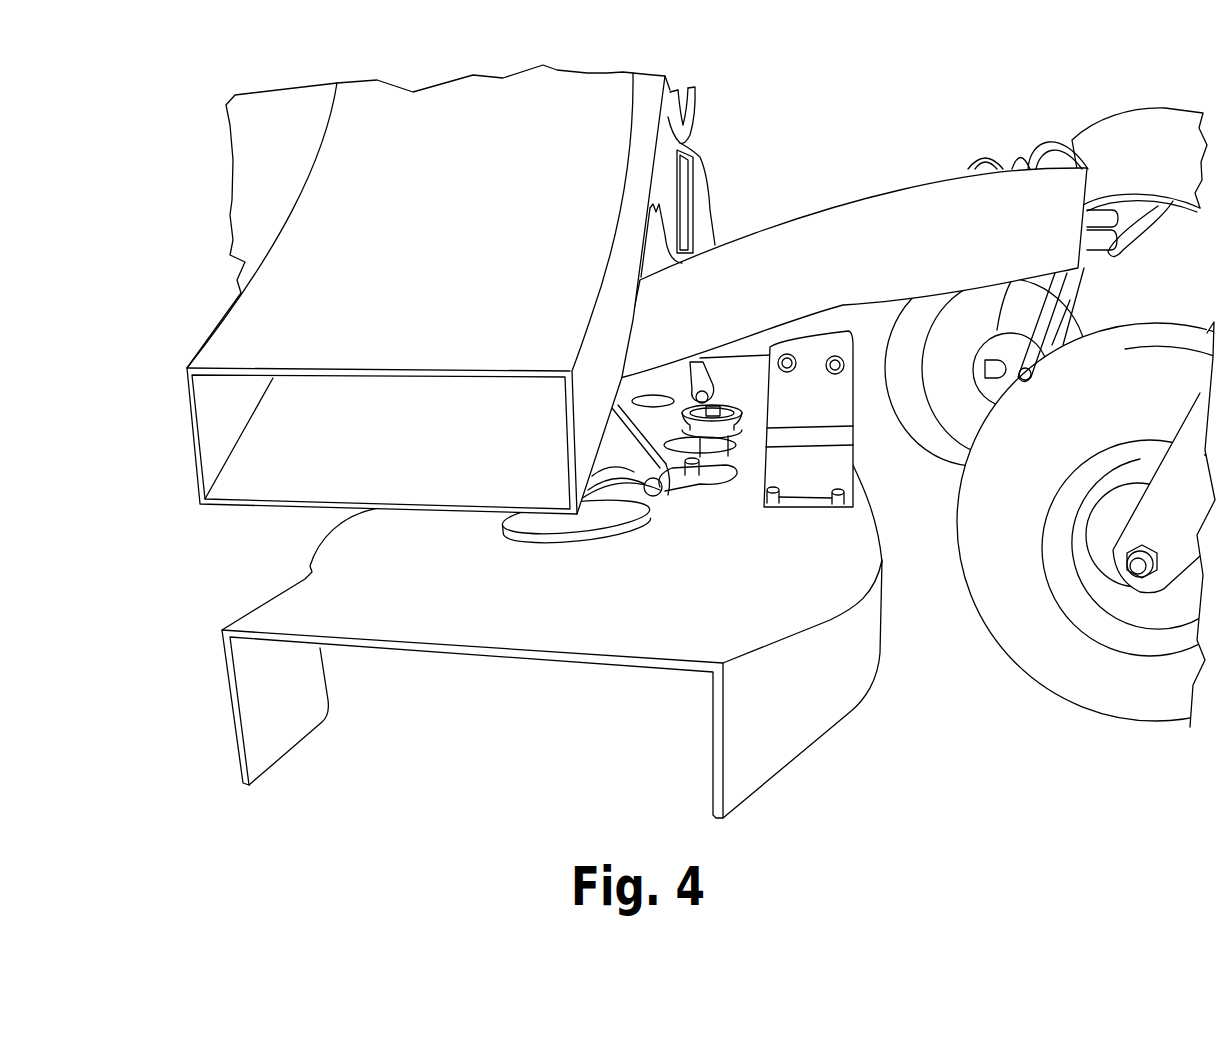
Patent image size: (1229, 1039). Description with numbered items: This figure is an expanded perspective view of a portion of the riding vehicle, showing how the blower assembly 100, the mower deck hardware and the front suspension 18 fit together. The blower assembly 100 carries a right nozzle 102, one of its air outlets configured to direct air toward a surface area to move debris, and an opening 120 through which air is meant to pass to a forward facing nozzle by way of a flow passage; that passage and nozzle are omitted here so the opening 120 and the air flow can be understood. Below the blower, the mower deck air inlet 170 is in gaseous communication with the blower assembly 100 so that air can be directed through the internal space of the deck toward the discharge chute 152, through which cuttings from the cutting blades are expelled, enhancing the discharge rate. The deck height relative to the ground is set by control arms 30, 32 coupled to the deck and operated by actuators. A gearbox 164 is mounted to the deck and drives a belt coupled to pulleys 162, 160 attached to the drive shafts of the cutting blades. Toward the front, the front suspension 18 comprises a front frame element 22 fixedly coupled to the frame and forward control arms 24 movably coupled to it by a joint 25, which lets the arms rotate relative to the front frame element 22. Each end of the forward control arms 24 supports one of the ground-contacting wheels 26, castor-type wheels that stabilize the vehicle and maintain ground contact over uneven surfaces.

The front suspension 18 is at (942, 57).
The front frame element 22 is at (855, 212).
The forward control arms 24 is at (1147, 233).
The joint 25 is at (1095, 240).
The ground-contacting wheels 26 is at (922, 437).
The control arm 30 is at (703, 382).
The control arm 32 is at (633, 458).
The blower assembly 100 is at (692, 122).
The right nozzle 102 is at (410, 378).
The opening 120 is at (692, 187).
The discharge chute 152 is at (477, 658).
The pulley 160 is at (720, 447).
The pulley 162 is at (587, 537).
The gearbox 164 is at (840, 410).
The mower deck air inlet 170 is at (652, 396).